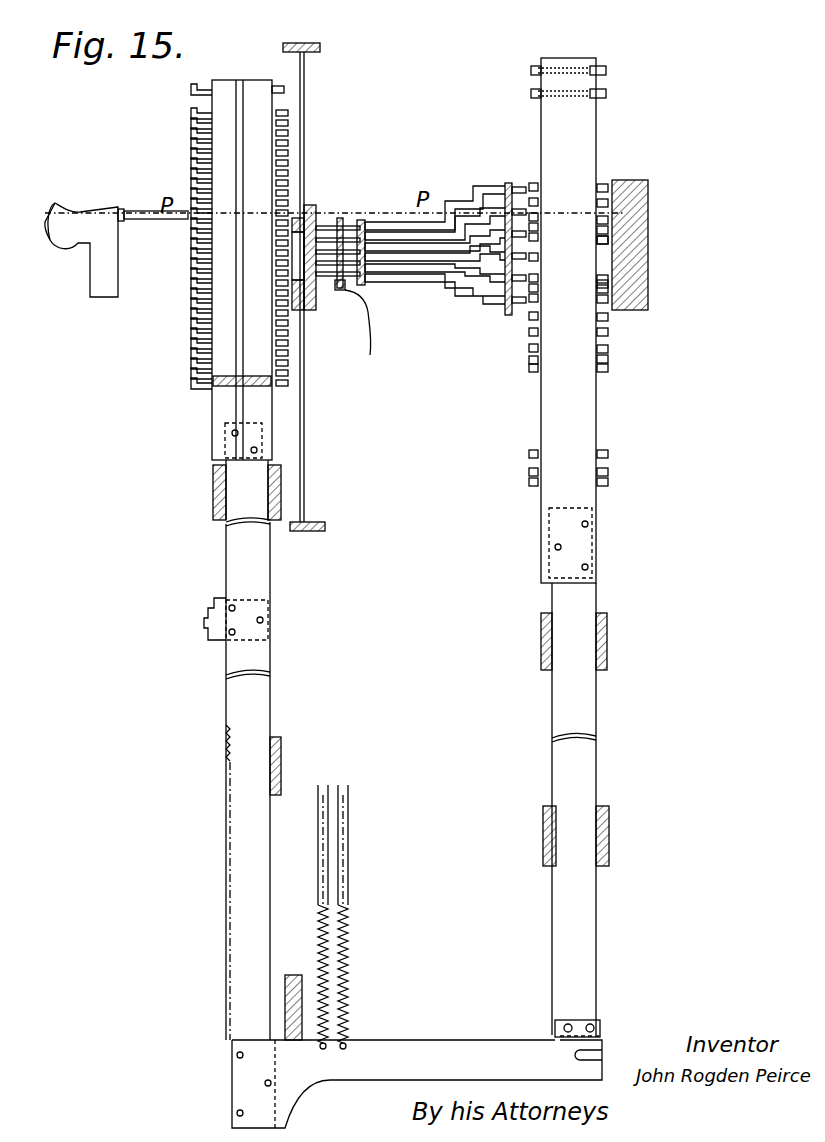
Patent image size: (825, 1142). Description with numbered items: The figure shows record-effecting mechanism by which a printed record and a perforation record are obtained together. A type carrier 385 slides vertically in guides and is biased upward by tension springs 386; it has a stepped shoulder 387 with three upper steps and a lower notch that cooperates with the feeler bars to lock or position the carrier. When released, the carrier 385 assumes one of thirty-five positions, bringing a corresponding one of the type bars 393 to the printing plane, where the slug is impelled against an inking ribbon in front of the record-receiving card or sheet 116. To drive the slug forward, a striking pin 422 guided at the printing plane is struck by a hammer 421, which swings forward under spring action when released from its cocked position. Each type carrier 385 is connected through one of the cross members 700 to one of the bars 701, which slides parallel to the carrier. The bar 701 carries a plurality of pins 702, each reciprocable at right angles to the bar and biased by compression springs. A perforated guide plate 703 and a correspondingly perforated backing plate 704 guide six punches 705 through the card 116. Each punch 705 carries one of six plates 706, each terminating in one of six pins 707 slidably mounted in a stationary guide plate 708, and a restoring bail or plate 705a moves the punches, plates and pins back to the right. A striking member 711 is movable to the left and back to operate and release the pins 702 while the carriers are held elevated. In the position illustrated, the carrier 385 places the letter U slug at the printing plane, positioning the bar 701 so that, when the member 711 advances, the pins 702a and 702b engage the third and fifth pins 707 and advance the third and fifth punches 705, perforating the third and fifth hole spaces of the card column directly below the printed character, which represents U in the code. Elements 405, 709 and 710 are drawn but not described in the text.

The record-receiving card or sheet 116 is at (306, 160).
The type carrier 385 is at (262, 578).
The tension springs 386 is at (336, 988).
The stepped shoulder 387 is at (212, 640).
The type bars 393 is at (290, 112).
The block 405 is at (292, 1002).
The hammer 421 is at (60, 208).
The striking pin 422 is at (138, 208).
The cross members 700 is at (408, 1040).
The bars 701 is at (590, 702).
The pins 702 is at (608, 94).
The pin 702a is at (612, 242).
The pin 702b is at (612, 283).
The perforated guide plate 703 is at (312, 206).
The perforated backing plate 704 is at (306, 312).
The punches 705 is at (332, 236).
The restoring bail or plate 705a is at (376, 326).
The plates 706 is at (450, 205).
The pins 707 is at (518, 304).
The stationary guide plate 708 is at (508, 182).
The contacts 709 is at (612, 348).
The block 710 is at (350, 224).
The striking member 711 is at (648, 208).